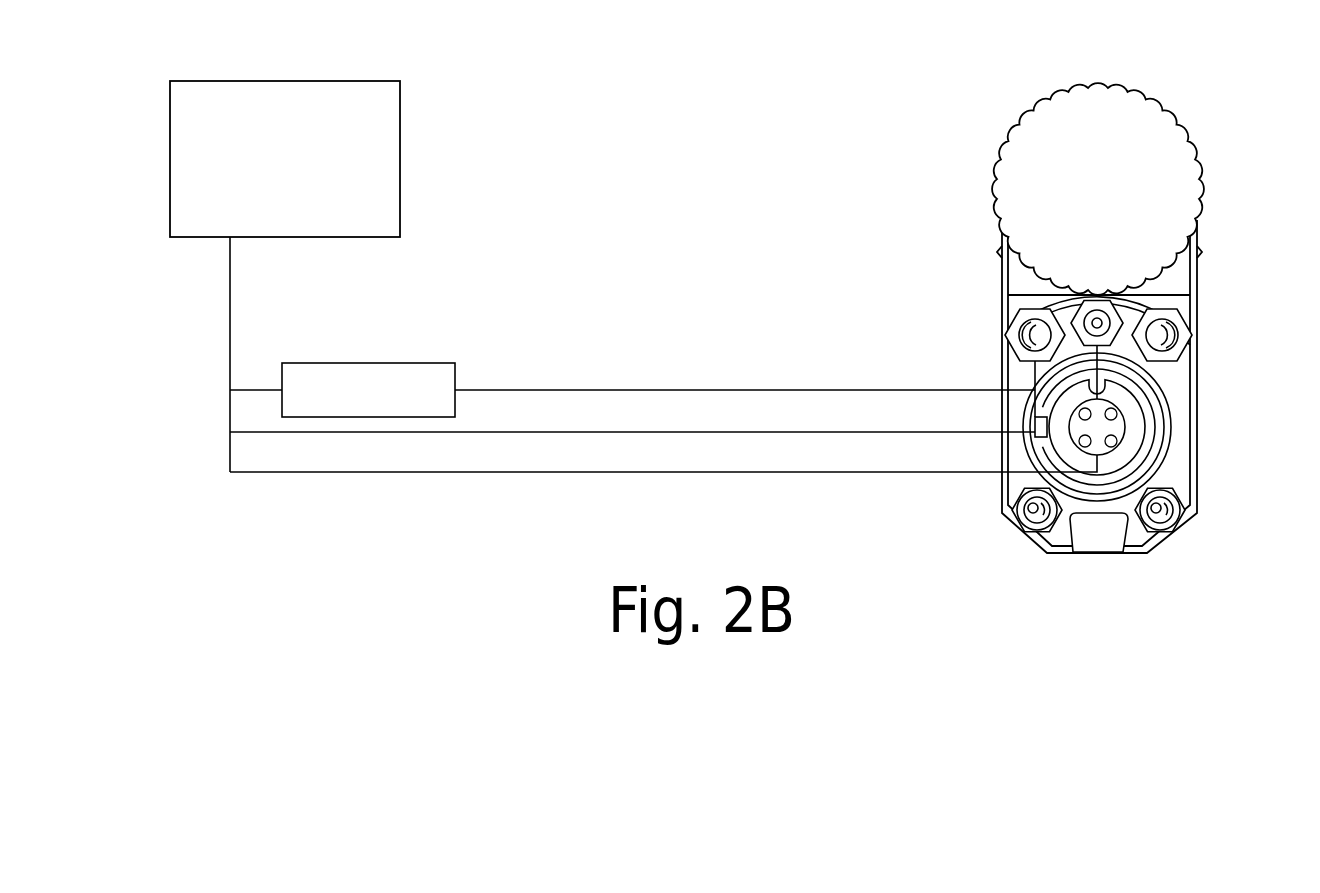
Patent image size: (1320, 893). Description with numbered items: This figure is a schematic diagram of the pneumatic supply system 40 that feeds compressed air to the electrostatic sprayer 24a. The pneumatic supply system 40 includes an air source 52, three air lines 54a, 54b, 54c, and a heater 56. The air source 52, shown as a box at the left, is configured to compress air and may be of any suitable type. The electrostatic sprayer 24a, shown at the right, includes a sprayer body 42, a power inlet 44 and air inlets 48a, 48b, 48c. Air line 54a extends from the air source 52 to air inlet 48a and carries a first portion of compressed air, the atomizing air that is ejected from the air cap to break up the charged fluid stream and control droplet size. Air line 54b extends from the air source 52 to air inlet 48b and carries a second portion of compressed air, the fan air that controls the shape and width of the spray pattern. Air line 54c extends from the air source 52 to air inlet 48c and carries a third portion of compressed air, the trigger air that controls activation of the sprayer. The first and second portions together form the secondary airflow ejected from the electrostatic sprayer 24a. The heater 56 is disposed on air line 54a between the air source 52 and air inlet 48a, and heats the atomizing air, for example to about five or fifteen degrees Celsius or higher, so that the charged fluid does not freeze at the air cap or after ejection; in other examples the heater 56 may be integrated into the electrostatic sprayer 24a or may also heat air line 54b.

The pneumatic supply system 40 is at (552, 185).
The electrostatic sprayer 24a is at (1218, 183).
The sprayer body 42 is at (1048, 147).
The power inlet 44 is at (1120, 423).
The air inlet 48a is at (1188, 323).
The air inlet 48b is at (1007, 327).
The air inlet 48c is at (1070, 307).
The air source 52 is at (285, 159).
The air line 54a is at (678, 383).
The air line 54b is at (783, 423).
The air line 54c is at (793, 477).
The heater 56 is at (415, 363).